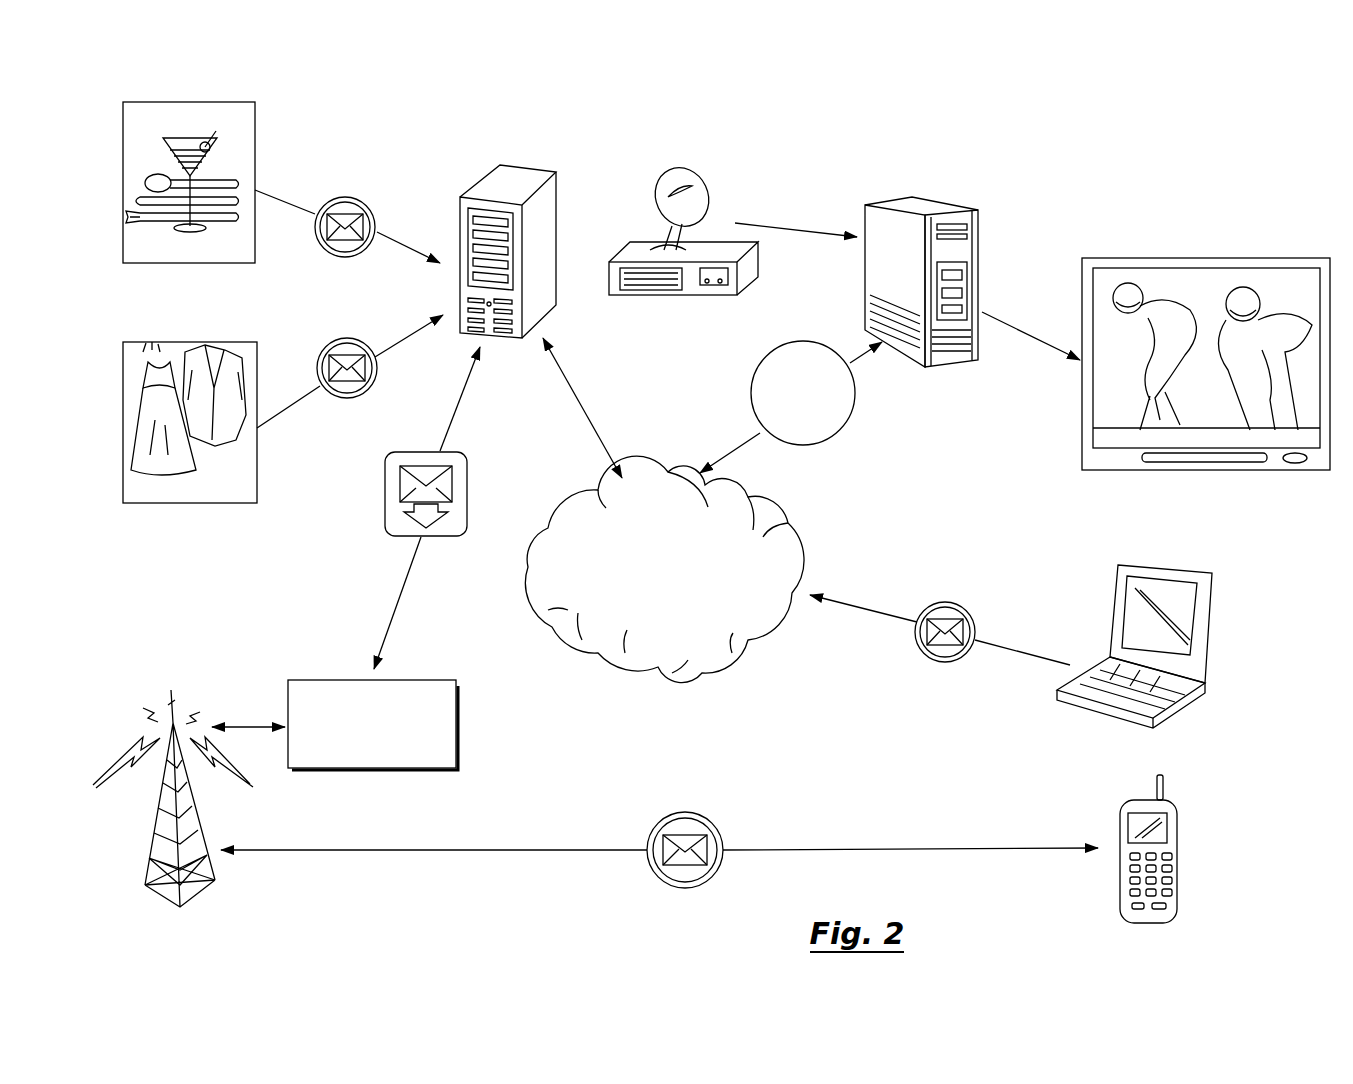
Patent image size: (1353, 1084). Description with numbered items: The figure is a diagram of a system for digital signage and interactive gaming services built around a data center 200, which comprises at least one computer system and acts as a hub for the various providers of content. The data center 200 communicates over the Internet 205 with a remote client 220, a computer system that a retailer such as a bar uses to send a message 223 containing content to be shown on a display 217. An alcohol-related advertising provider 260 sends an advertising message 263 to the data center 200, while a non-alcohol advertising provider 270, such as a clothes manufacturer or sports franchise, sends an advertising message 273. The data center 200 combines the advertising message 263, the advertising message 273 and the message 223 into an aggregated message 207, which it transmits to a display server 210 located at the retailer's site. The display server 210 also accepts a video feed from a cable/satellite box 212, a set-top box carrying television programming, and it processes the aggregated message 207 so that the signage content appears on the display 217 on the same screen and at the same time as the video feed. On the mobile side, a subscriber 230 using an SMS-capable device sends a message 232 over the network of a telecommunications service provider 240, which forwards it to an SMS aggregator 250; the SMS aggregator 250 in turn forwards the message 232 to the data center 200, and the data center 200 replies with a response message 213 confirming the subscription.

The data center 200 is at (513, 176).
The Internet 205 is at (702, 676).
The aggregated message 207 is at (852, 420).
The display server 210 is at (915, 200).
The cable/satellite box 212 is at (715, 190).
The response message 213 is at (469, 490).
The display 217 is at (1185, 258).
The remote client 220 is at (1210, 630).
The message 223 is at (958, 600).
The subscriber 230 is at (1177, 853).
The message 232 is at (662, 880).
The service provider 240 is at (156, 841).
The SMS aggregator 250 is at (458, 722).
The advertising provider 260 is at (187, 100).
The advertising message 263 is at (378, 198).
The advertising provider 270 is at (188, 503).
The advertising message 273 is at (347, 398).